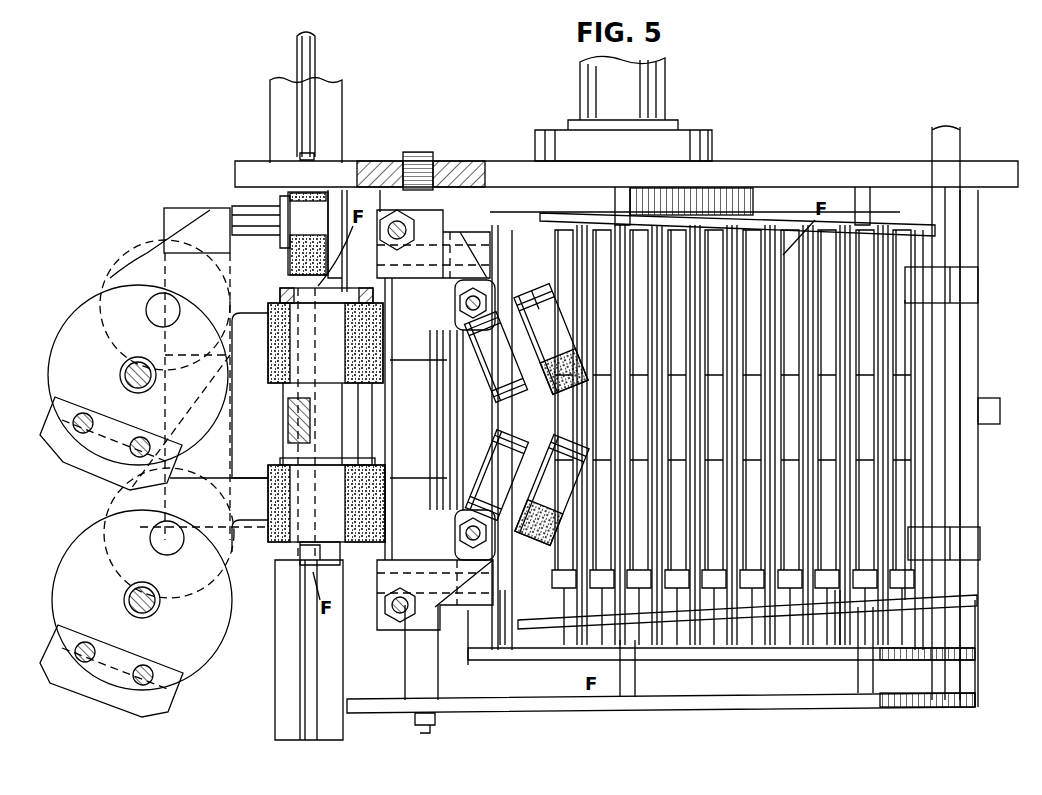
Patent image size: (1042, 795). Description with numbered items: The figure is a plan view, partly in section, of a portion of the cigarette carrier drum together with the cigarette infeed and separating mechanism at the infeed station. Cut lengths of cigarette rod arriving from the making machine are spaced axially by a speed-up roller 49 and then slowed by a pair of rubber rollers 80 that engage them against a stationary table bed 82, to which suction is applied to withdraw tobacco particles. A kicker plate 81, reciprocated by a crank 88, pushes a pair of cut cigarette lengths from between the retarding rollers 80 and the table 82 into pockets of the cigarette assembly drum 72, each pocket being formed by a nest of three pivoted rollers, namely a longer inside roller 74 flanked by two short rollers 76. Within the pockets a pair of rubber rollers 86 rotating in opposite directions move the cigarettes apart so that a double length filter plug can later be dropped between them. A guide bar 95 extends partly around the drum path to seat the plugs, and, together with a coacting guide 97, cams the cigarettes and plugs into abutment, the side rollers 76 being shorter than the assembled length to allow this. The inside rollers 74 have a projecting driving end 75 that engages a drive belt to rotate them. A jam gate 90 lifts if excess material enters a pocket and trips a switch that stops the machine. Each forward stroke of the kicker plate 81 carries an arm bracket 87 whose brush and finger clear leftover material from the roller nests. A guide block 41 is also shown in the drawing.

The guide block 41 is at (927, 370).
The speed-up roller 49 is at (318, 212).
The cigarette assembly drum 72 is at (770, 250).
The inside roller 74 is at (502, 642).
The projecting driving end 75 is at (715, 637).
The short roller 76 is at (580, 263).
The rubber rollers 80 is at (293, 367).
The kicker plate 81 is at (265, 290).
The stationary table bed 82 is at (333, 122).
The rubber rollers 86 is at (545, 317).
The arm bracket 87 is at (202, 233).
The crank 88 is at (92, 320).
The jam gate 90 is at (977, 370).
The guide bar 95 is at (715, 220).
The guide 97 is at (672, 613).